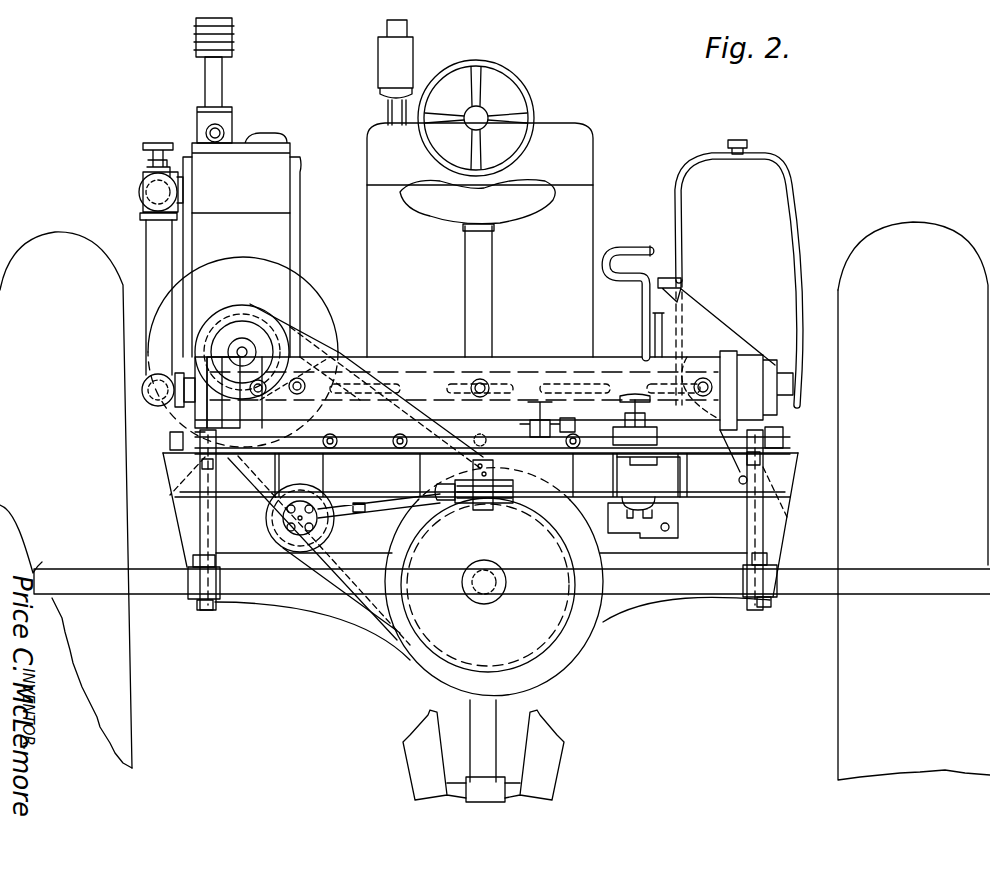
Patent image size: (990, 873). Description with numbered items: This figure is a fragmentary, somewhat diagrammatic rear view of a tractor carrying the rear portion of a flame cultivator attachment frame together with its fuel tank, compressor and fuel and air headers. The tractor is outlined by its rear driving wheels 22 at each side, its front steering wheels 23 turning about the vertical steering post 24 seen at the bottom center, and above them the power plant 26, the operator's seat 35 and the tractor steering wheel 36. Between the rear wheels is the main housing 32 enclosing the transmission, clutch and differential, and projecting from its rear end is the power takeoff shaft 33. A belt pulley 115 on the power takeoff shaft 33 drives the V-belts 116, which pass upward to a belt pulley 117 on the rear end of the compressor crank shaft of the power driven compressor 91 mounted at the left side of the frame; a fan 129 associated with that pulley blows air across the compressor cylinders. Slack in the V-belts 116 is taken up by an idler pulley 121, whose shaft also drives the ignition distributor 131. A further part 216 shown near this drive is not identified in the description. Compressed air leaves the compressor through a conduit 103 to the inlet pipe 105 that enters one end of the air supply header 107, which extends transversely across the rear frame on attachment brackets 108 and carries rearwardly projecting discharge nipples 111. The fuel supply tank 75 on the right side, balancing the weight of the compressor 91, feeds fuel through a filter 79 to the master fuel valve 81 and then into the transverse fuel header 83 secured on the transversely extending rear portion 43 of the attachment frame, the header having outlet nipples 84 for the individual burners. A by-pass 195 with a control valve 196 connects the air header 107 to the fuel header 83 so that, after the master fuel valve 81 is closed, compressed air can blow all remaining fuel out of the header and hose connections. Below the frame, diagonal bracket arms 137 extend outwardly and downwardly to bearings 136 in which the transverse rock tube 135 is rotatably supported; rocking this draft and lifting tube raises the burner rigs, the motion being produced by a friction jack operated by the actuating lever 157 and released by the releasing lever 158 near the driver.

The rear driving wheels 22 is at (58, 399).
The front steering wheels 23 is at (418, 775).
The vertical steering post 24 is at (500, 718).
The power plant 26 is at (368, 237).
The main housing 32 is at (412, 662).
The power takeoff shaft 33 is at (483, 590).
The operator's seat 35 is at (540, 203).
The tractor steering wheel 36 is at (503, 72).
The transversely extending rear portion 43 is at (225, 487).
The fuel supply tank 75 is at (697, 160).
The filter 79 is at (647, 480).
The master fuel valve 81 is at (581, 443).
The transverse fuel header 83 is at (338, 447).
The outlet nipples 84 is at (400, 447).
The power driven compressor 91 is at (183, 128).
The conduit 103 is at (163, 262).
The inlet pipe 105 is at (152, 405).
The air supply header 107 is at (413, 361).
The attachment brackets 108 is at (726, 362).
The discharge nipples 111 is at (486, 380).
The belt pulley 115 is at (563, 632).
The V-belts 116 is at (395, 630).
The belt pulley 117 is at (245, 298).
The idler pulley 121 is at (290, 525).
The fan 129 is at (282, 297).
The ignition distributor 131 is at (298, 545).
The transverse rock tube 135 is at (108, 600).
The bearings 136 is at (200, 583).
The diagonal bracket arms 137 is at (188, 520).
The actuating lever 157 is at (625, 252).
The releasing lever 158 is at (657, 325).
The by-pass 195 is at (312, 405).
The control valve 196 is at (335, 340).
The clutch block 216 is at (460, 493).